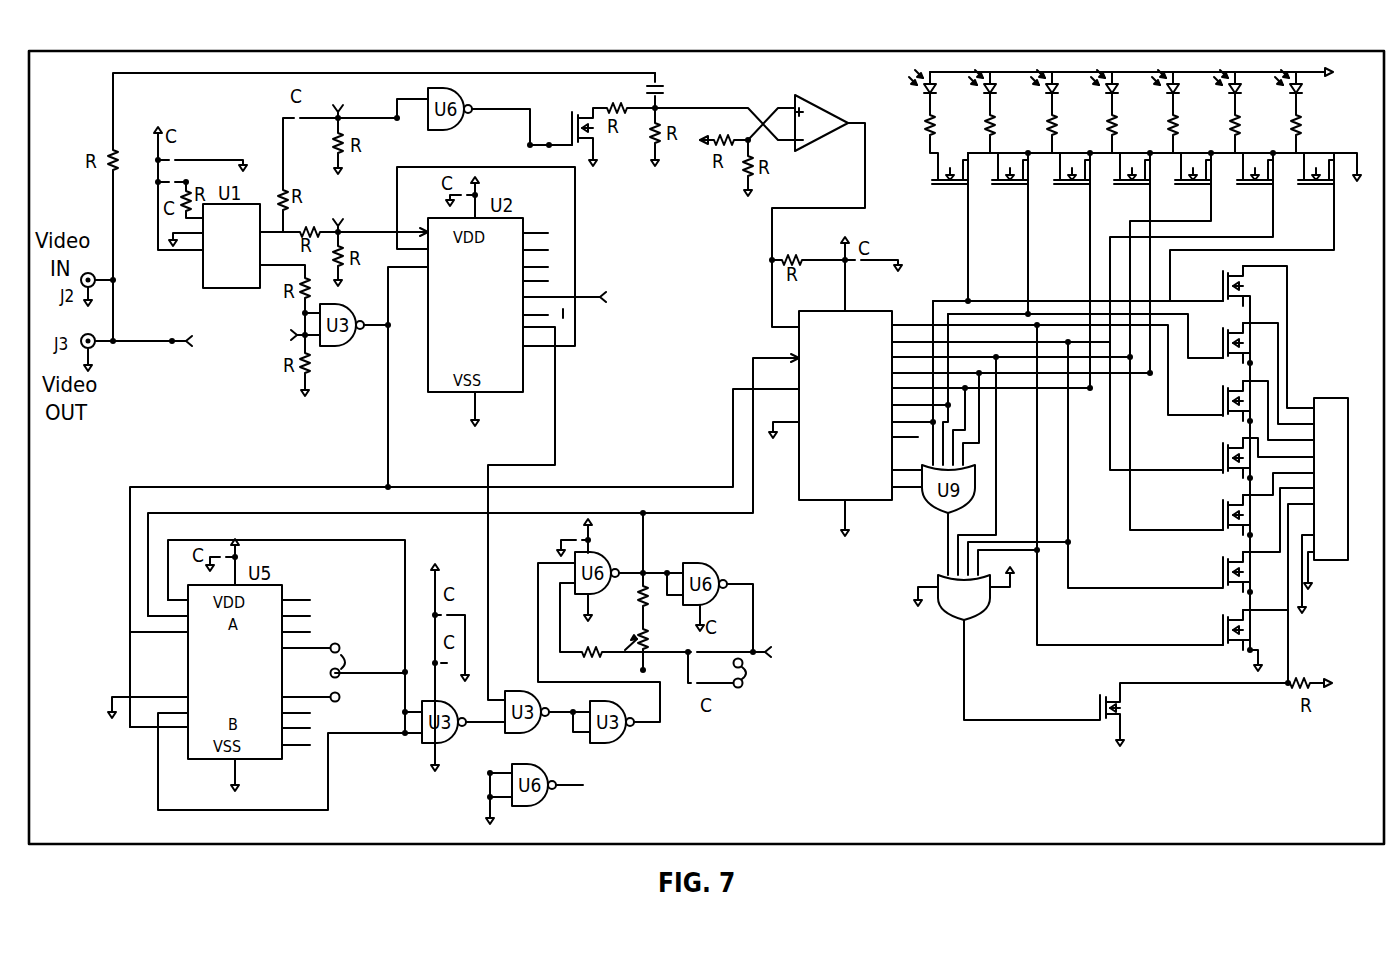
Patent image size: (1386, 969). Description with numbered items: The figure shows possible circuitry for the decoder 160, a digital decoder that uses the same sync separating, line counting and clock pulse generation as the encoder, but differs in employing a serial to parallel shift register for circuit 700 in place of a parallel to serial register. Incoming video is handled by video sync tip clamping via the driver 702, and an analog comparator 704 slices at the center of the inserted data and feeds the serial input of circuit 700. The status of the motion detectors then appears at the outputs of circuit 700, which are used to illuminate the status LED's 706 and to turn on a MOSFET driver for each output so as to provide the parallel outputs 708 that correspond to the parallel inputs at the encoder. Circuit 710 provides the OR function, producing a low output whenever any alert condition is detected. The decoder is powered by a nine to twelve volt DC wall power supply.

The decoder 160 is at (93, 46).
The serial to parallel shift register circuit 700 is at (818, 477).
The driver 702 is at (585, 95).
The analog comparator 704 is at (830, 108).
The status LED's 706 is at (1078, 103).
The parallel outputs 708 is at (1327, 395).
The OR function circuit 710 is at (935, 599).